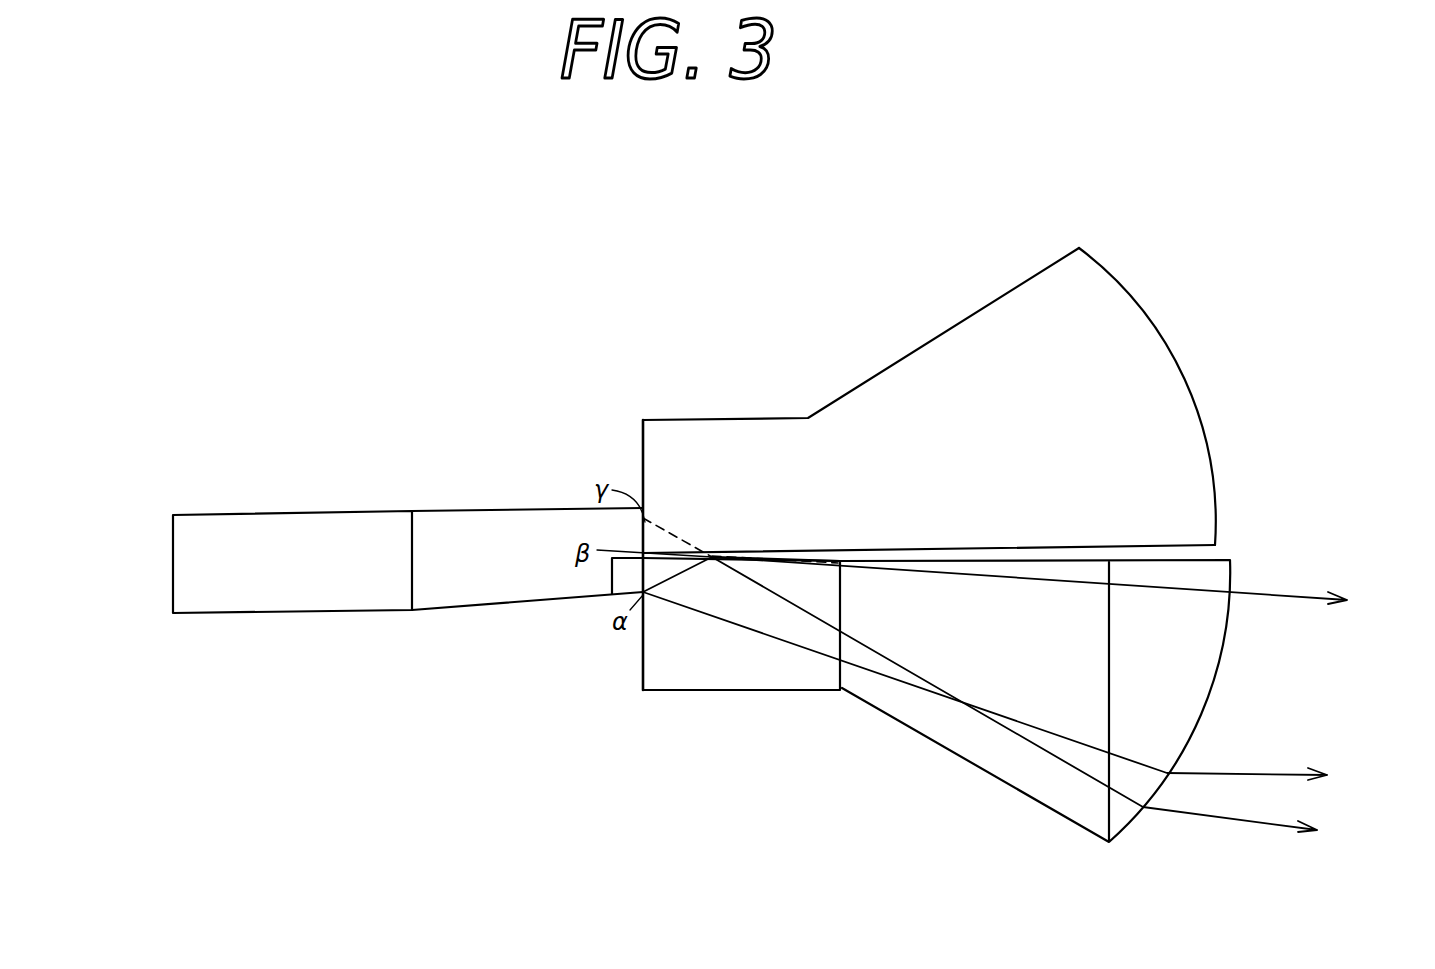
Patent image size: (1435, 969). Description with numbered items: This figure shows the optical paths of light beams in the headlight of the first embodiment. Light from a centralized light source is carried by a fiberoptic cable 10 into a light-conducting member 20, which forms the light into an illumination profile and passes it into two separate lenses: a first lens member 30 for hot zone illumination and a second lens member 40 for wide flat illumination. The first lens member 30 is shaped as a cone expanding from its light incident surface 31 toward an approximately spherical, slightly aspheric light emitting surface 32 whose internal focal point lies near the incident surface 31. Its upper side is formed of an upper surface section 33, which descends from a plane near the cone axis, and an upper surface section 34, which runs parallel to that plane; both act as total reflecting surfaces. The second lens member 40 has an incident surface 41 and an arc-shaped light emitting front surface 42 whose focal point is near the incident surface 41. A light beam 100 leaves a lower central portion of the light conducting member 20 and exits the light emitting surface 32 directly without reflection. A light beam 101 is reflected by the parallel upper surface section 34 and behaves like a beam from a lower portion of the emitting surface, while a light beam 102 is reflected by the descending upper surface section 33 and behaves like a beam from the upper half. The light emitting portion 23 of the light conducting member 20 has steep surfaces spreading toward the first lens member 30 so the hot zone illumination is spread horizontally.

The fiberoptic cable 10 is at (237, 590).
The light-conducting member 20 is at (477, 590).
The light emitting portion 23 is at (622, 583).
The first lens member 30 is at (697, 672).
The light incident surface 31 is at (643, 678).
The light emitting surface 32 is at (1218, 667).
The upper surface section 33 is at (742, 557).
The upper surface section 34 is at (1077, 562).
The second lens member 40 is at (925, 372).
The incident surface 41 is at (606, 486).
The light emitting front surface 42 is at (1157, 335).
The light beam 100 is at (1021, 690).
The light beam 101 is at (1068, 587).
The light beam 102 is at (1049, 705).